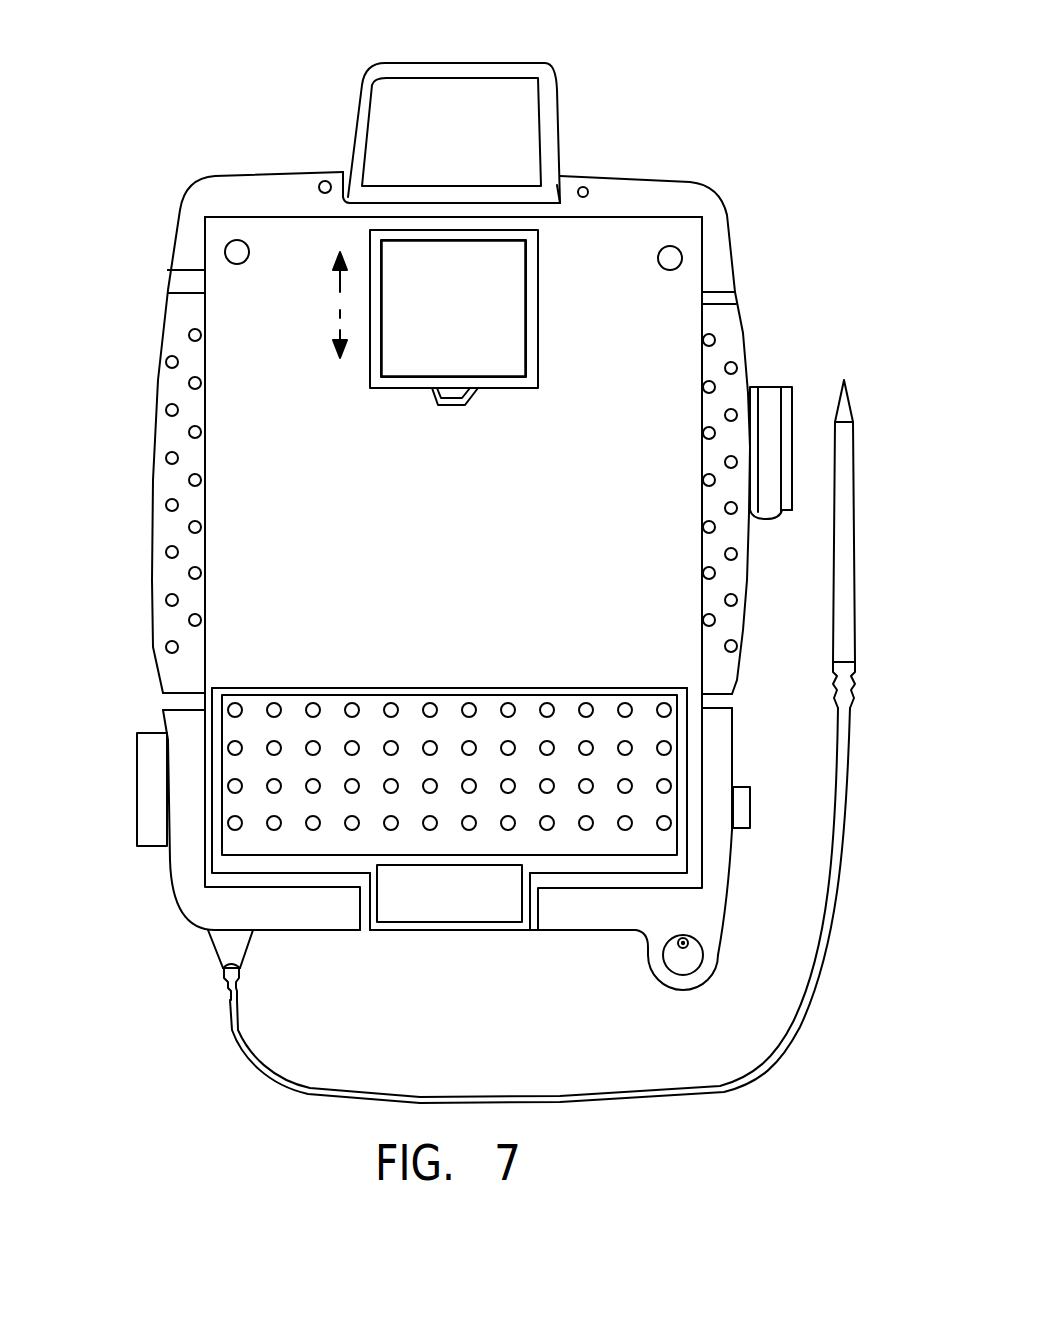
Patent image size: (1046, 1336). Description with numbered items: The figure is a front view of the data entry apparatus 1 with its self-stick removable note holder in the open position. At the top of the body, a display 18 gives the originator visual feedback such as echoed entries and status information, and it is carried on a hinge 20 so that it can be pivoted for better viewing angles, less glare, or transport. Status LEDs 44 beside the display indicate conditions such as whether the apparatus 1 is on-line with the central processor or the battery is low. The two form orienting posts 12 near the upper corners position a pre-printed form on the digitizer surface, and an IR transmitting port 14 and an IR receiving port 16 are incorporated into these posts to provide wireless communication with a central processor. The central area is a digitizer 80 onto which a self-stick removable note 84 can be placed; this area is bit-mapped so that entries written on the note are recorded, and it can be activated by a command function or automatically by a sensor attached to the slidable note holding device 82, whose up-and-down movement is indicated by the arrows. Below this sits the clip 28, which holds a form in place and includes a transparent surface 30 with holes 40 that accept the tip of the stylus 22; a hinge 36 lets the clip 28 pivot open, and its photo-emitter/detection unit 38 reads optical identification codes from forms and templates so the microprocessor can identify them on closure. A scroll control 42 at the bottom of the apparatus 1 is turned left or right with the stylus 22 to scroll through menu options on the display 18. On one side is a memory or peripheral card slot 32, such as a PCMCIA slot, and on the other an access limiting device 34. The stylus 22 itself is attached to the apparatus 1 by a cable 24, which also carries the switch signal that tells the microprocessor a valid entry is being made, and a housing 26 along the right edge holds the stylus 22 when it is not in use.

The apparatus 1 is at (703, 175).
The form orienting posts 12 is at (252, 262).
The IR transmitting port 14 is at (225, 254).
The IR receiving port 16 is at (683, 258).
The display 18 is at (438, 108).
The hinge 20 is at (570, 185).
The stylus 22 is at (850, 528).
The cable 24 is at (828, 905).
The housing 26 is at (770, 390).
The clip 28 is at (300, 855).
The transparent surface 30 is at (462, 710).
The memory or peripheral card slot 32 is at (137, 790).
The access limiting device 34 is at (752, 805).
The hinge 36 is at (505, 930).
The photo-emitter/detection unit 38 is at (445, 905).
The holes 40 is at (552, 708).
The scroll control 42 is at (687, 957).
The status LEDs 44 is at (328, 180).
The digitizer 80 is at (632, 357).
The slidable note holding device 82 is at (370, 388).
The self-stick removable note 84 is at (493, 355).